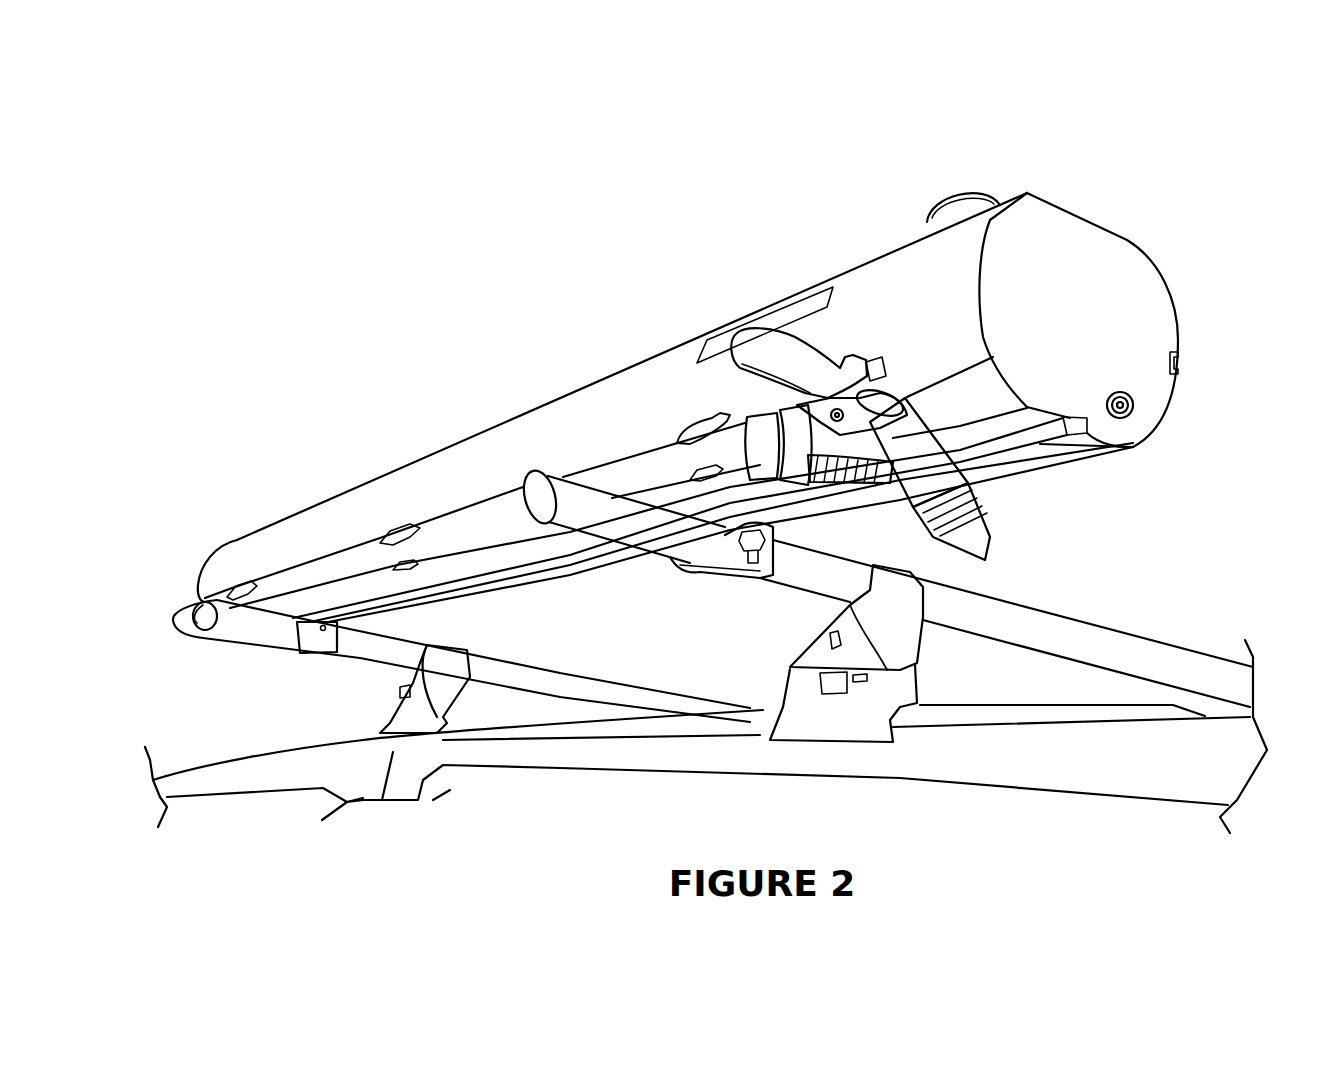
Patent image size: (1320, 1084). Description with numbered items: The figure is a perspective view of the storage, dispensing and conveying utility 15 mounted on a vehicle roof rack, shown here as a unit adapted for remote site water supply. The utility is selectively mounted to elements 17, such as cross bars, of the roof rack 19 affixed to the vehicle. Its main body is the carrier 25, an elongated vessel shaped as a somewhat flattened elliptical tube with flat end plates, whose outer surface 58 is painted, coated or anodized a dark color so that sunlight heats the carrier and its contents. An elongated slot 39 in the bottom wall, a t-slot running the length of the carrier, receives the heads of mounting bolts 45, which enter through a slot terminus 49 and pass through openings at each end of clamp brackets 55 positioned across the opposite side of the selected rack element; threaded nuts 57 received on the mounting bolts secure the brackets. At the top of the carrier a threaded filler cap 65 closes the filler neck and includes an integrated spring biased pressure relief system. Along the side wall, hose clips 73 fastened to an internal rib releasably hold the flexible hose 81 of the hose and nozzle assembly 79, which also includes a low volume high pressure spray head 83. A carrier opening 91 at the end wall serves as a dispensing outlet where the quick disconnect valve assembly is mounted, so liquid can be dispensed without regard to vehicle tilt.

The storage, dispensing and conveying utility 15 is at (863, 205).
The elements 17 is at (628, 696).
The roof rack 19 is at (1042, 715).
The carrier 25 is at (423, 470).
The elongated slot 39 is at (1047, 447).
The mounting bolts 45 is at (752, 565).
The slot terminus 49 is at (1087, 430).
The clamp brackets 55 is at (705, 562).
The threaded nuts 57 is at (775, 537).
The outer surface 58 is at (843, 283).
The threaded filler cap 65 is at (953, 190).
The hose clips 73 is at (687, 428).
The hose and nozzle assembly 79 is at (480, 513).
The flexible hose 81 is at (305, 580).
The low volume high pressure spray head 83 is at (985, 512).
The carrier opening 91 is at (1127, 408).